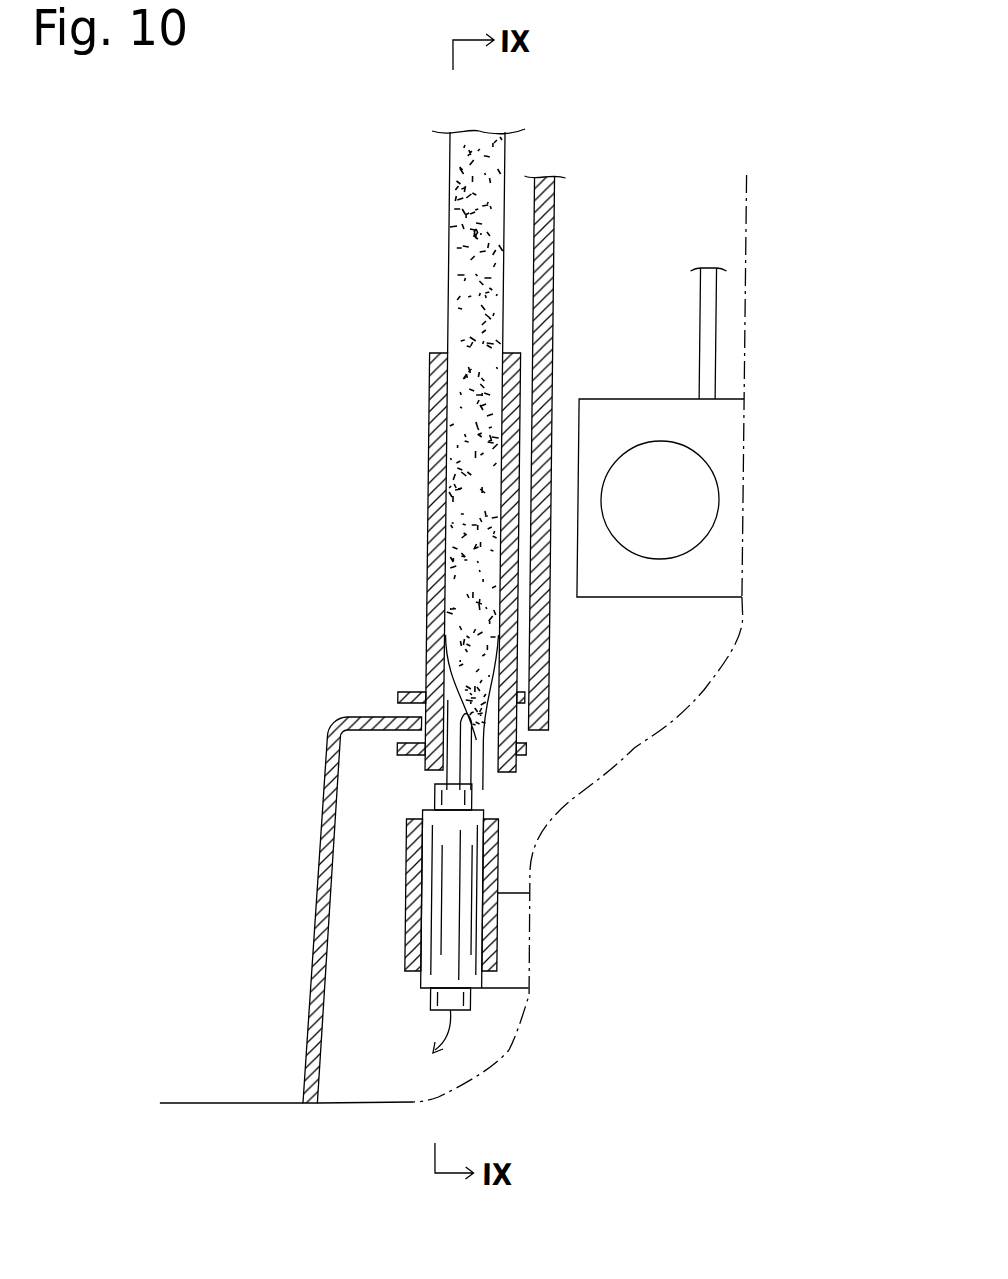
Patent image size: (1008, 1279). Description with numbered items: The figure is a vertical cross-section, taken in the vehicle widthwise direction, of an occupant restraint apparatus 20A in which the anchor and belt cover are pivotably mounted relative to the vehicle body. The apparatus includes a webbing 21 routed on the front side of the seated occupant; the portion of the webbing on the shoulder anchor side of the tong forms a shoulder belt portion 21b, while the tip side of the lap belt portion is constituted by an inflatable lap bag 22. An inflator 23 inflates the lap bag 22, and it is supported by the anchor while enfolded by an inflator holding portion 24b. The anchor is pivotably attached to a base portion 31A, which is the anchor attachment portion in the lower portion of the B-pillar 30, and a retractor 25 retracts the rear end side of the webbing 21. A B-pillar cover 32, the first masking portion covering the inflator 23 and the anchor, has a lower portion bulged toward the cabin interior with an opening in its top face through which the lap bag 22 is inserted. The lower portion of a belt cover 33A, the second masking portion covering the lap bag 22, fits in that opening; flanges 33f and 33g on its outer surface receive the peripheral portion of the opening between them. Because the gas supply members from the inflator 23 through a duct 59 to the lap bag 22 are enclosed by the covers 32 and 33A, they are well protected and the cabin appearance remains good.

The occupant restraint apparatus 20A is at (299, 391).
The lap bag 22 is at (445, 208).
The belt cover 33A is at (432, 515).
The flange 33f is at (415, 693).
The flange 33g is at (427, 753).
The duct 59 is at (439, 790).
The inflator 23 is at (440, 904).
The B-pillar cover 32 is at (315, 962).
The inflator holding portion 24b is at (503, 943).
The base portion 31A is at (525, 969).
The webbing 21 is at (670, 300).
The shoulder belt portion 21b is at (701, 307).
The B-pillar 30 is at (745, 196).
The retractor 25 is at (714, 575).